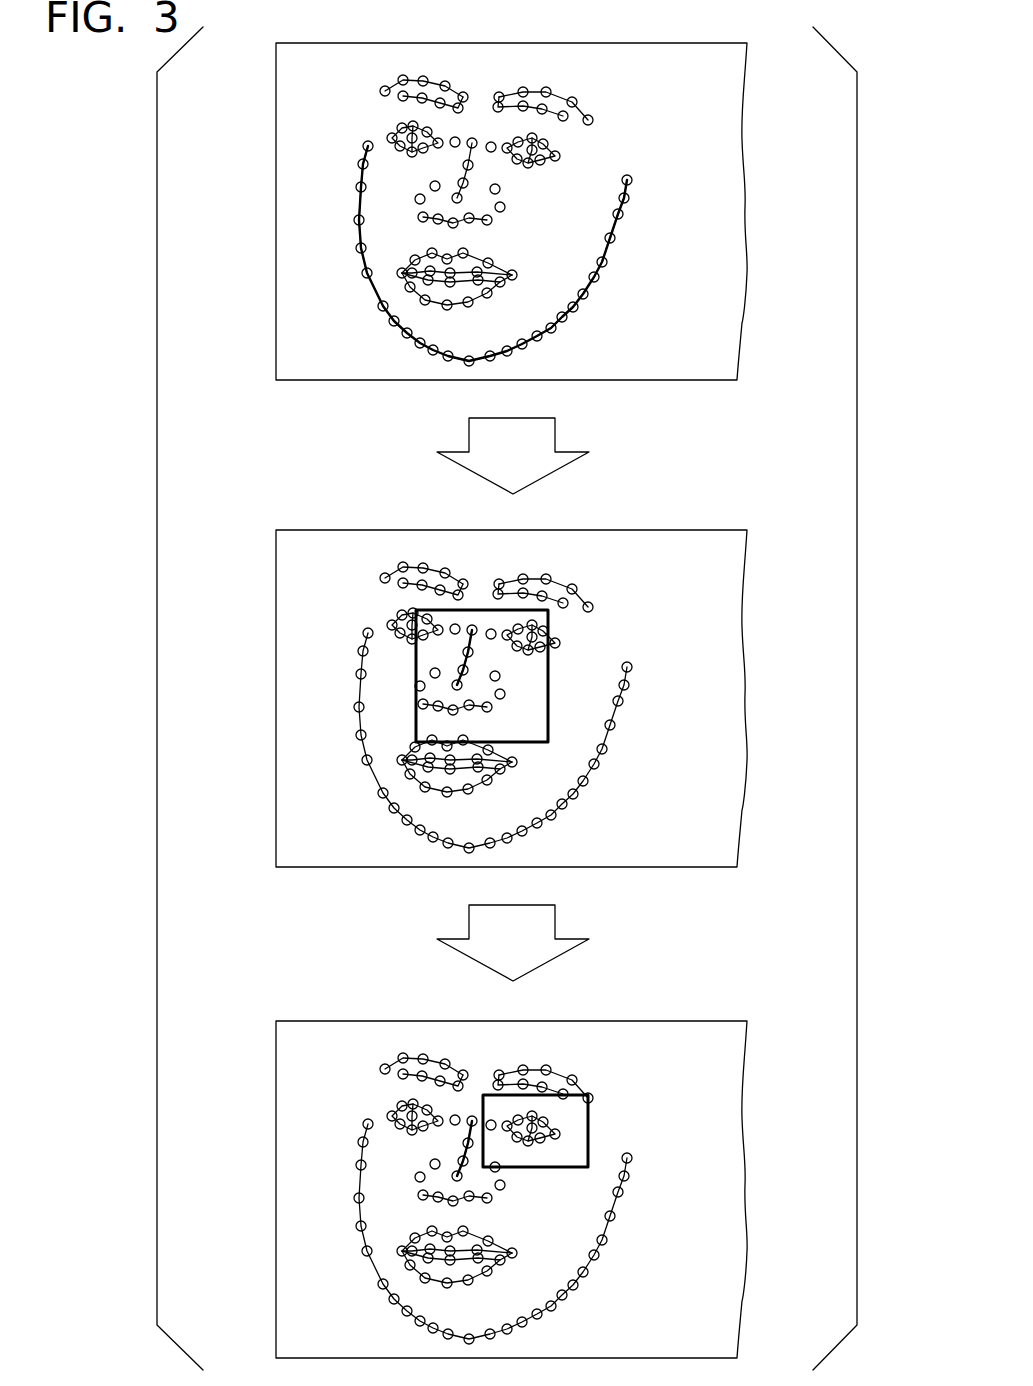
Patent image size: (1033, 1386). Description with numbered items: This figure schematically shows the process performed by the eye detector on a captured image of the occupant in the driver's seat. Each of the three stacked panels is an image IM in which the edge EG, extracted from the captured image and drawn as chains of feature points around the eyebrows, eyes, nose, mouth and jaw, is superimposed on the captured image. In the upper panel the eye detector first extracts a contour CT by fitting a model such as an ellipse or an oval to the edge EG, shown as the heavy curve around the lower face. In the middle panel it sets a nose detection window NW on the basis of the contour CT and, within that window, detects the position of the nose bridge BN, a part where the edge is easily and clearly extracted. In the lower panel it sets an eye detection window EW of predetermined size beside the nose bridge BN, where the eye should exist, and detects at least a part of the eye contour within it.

The image IM is at (275, 209).
The edge EG is at (593, 122).
The contour CT is at (613, 230).
The nose bridge BN is at (470, 655).
The nose detection window NW is at (549, 715).
The eye detection window EW is at (589, 1128).